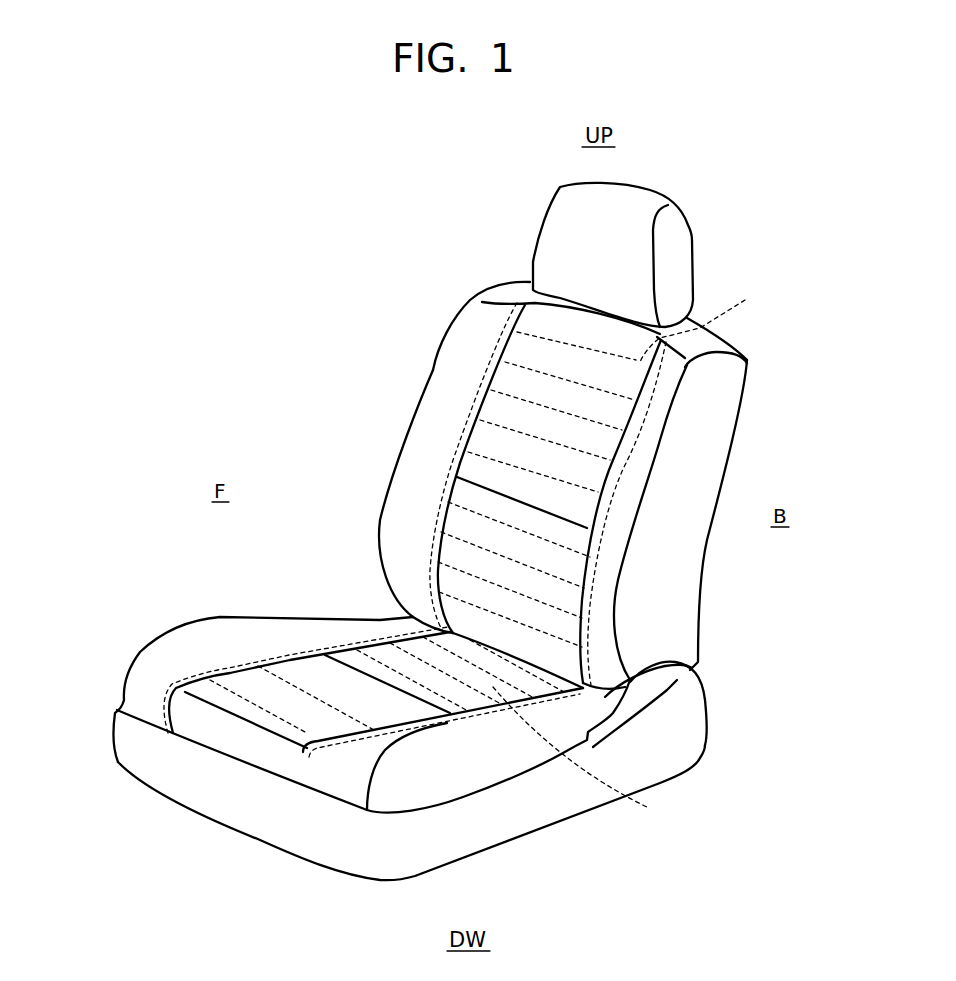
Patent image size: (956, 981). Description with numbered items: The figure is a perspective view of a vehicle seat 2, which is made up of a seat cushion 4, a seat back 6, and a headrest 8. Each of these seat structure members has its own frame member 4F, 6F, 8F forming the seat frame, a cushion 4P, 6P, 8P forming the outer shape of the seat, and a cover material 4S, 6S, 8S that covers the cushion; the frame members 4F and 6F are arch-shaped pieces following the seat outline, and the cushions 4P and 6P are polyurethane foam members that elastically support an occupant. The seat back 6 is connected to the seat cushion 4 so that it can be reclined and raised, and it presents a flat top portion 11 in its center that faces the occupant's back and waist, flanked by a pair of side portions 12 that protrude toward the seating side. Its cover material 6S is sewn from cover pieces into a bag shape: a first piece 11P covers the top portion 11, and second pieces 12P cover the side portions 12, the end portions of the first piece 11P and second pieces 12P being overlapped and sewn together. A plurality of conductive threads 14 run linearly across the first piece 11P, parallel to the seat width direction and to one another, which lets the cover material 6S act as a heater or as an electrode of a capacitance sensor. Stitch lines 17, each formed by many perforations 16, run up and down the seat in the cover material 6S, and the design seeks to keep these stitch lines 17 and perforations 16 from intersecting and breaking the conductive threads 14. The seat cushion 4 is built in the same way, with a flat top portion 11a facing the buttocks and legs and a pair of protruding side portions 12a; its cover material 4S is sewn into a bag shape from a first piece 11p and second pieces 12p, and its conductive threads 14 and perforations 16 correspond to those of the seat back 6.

The vehicle seat 2 is at (752, 213).
The seat cushion 4 is at (398, 727).
The frame member 4F is at (398, 727).
The cushion 4P is at (398, 727).
The cover material 4S is at (218, 617).
The seat back 6 is at (488, 485).
The frame member 6F is at (488, 485).
The cushion 6P is at (488, 485).
The cover material 6S is at (430, 413).
The headrest 8 is at (516, 255).
The frame member 8F is at (516, 255).
The cushion 8P is at (516, 255).
The cover material 8S is at (550, 256).
The top portion 11 is at (551, 460).
The side portions 12 is at (443, 465).
The first piece 11P is at (463, 521).
The second piece 12P is at (403, 498).
The top portion 11a is at (374, 692).
The side portions 12a is at (373, 718).
The first piece 11p is at (223, 742).
The second pieces 12p is at (148, 703).
The conductive threads 14 is at (629, 556).
The perforations 16 is at (541, 578).
The stitch lines 17 is at (500, 343).